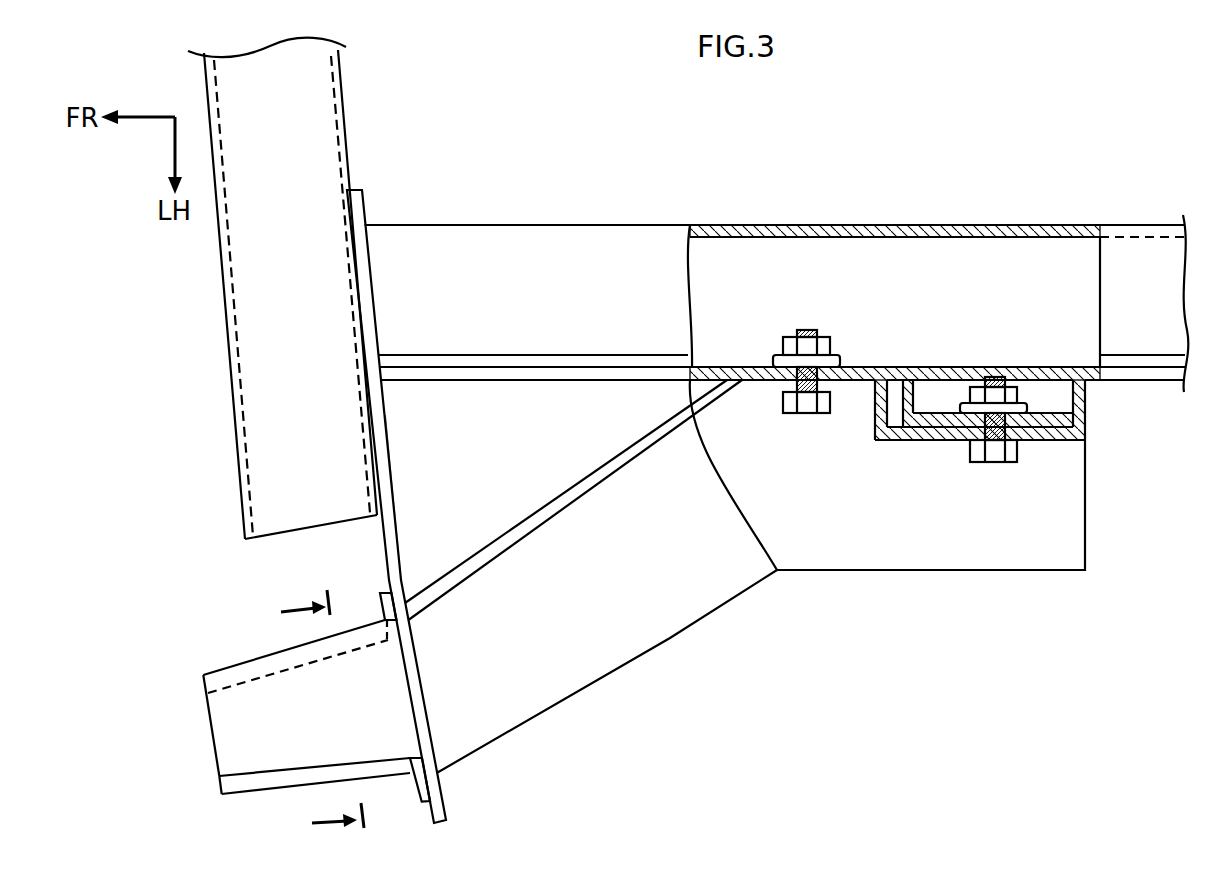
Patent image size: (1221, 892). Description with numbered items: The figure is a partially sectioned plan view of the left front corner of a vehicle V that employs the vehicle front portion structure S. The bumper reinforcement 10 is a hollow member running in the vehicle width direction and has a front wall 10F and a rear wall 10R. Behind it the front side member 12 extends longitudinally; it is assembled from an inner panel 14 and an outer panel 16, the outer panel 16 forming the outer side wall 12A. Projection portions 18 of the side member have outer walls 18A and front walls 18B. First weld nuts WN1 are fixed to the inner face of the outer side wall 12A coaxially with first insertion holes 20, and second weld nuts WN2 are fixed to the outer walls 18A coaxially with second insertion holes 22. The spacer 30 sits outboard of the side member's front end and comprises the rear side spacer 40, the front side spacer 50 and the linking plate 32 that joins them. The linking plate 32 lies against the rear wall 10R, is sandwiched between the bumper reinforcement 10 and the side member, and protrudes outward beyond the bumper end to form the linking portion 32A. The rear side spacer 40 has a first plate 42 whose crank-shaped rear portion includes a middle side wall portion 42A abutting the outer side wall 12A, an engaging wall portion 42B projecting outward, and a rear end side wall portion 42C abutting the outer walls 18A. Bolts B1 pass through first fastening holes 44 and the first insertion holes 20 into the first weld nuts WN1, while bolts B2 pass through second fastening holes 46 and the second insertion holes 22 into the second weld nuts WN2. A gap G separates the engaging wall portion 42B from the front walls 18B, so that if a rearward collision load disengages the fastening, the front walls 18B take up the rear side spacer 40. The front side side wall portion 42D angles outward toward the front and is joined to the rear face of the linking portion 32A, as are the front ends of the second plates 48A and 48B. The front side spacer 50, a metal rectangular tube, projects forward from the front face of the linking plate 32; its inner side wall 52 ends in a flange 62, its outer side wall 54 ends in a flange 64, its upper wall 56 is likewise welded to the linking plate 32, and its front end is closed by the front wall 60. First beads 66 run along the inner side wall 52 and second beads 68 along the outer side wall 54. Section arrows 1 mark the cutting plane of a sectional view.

The section line 1 is at (312, 715).
The bumper reinforcement 10 is at (284, 288).
The front wall 10F is at (227, 398).
The rear wall 10R is at (383, 435).
The front side member 12 is at (777, 289).
The outer side wall 12A is at (553, 382).
The inner panel 14 is at (1138, 254).
The outer panel 16 is at (1161, 381).
The projection portions 18 is at (1024, 398).
The outer walls 18A is at (935, 412).
The front walls 18B is at (912, 390).
The first insertion holes 20 is at (804, 391).
The second insertion holes 22 is at (1020, 401).
The spacer 30 is at (636, 499).
The linking plate 32 is at (422, 476).
The linking portion 32A is at (400, 552).
The rear side spacer 40 is at (808, 570).
The first plate 42 is at (573, 500).
The middle side wall portion 42A is at (750, 393).
The engaging wall portion 42B is at (877, 417).
The rear end side wall portion 42C is at (1052, 441).
The front side side wall portion 42D is at (627, 450).
The first fastening holes 44 is at (806, 393).
The second fastening holes 46 is at (993, 463).
The second plate 48A is at (657, 622).
The second plate 48B is at (877, 572).
The front side spacer 50 is at (280, 704).
The inner side wall 52 is at (222, 658).
The outer side wall 54 is at (252, 780).
The upper wall 56 is at (390, 703).
The front wall 60 is at (207, 712).
The flange 62 is at (380, 603).
The flange 64 is at (413, 792).
The first beads 66 is at (268, 660).
The second beads 68 is at (283, 797).
The bolts B1 is at (815, 414).
The bolts B2 is at (1012, 441).
The gap G is at (895, 390).
The vehicle front portion structure S is at (175, 802).
The vehicle V is at (954, 150).
The first weld nuts WN1 is at (823, 337).
The second weld nuts WN2 is at (1012, 387).